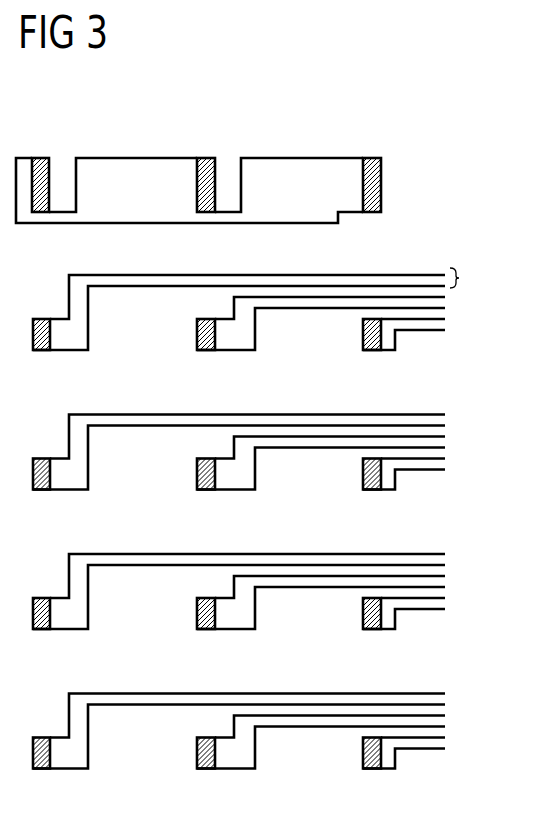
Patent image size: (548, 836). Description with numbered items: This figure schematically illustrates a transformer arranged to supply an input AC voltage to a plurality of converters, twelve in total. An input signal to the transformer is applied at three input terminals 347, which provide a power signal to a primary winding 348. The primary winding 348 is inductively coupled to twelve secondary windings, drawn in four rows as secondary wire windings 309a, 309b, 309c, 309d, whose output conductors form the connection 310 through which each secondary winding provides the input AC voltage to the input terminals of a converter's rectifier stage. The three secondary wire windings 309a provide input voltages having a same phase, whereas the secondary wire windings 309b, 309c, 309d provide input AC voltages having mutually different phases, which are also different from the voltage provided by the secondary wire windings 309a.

The input terminals 347 is at (41, 138).
The primary winding 348 is at (145, 158).
The secondary wire windings connection 310 is at (459, 278).
The secondary wire windings 309a is at (140, 287).
The secondary wire windings 309b is at (239, 479).
The secondary wire windings 309c is at (239, 618).
The secondary wire windings 309d is at (239, 758).